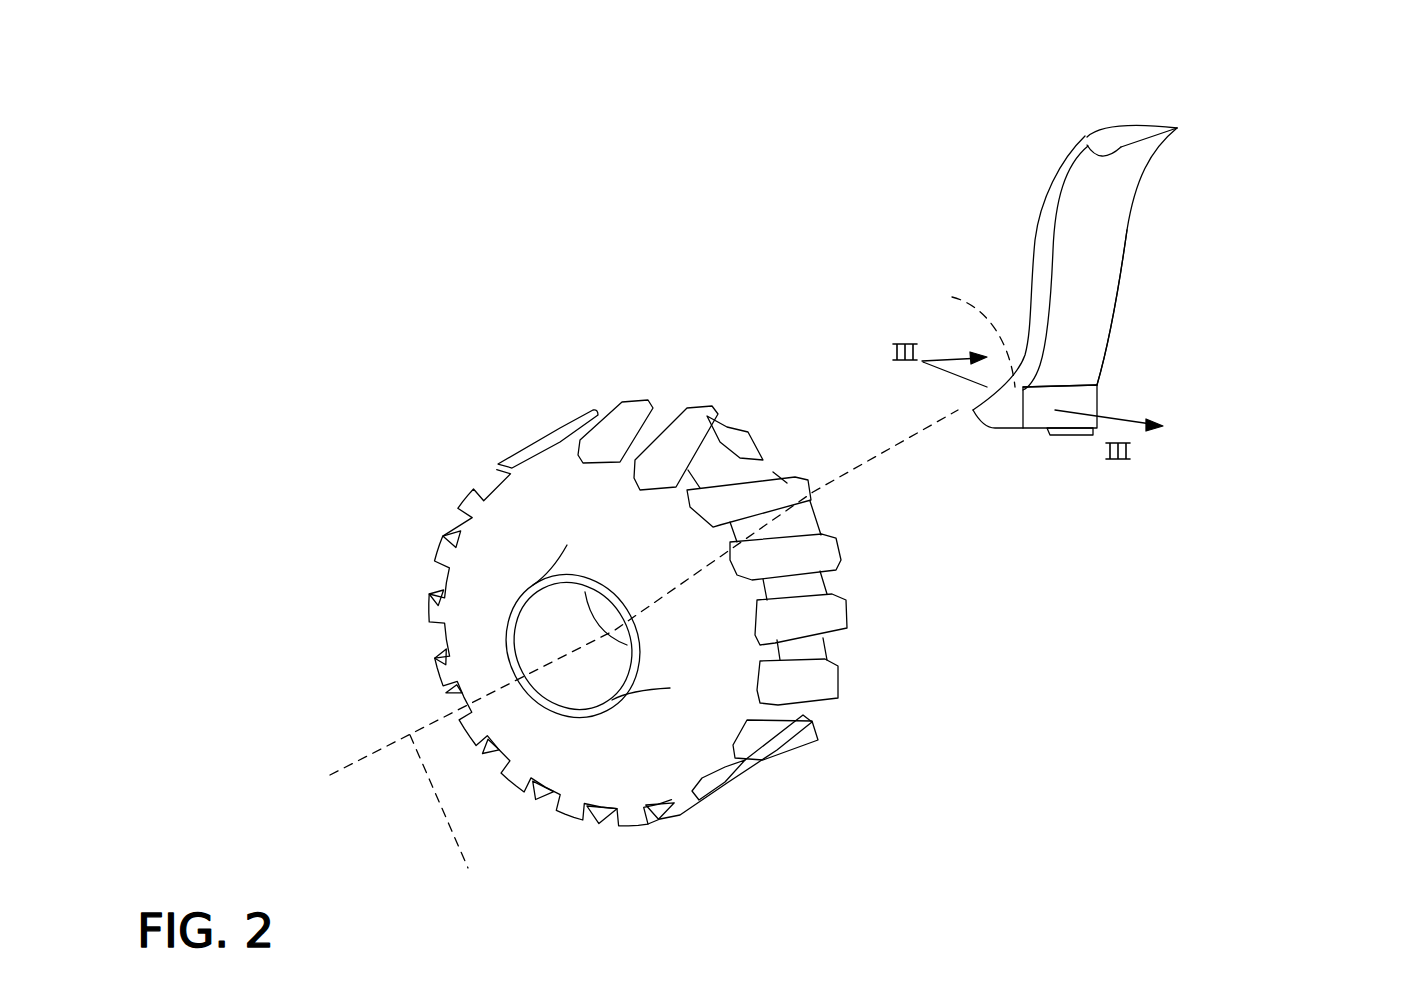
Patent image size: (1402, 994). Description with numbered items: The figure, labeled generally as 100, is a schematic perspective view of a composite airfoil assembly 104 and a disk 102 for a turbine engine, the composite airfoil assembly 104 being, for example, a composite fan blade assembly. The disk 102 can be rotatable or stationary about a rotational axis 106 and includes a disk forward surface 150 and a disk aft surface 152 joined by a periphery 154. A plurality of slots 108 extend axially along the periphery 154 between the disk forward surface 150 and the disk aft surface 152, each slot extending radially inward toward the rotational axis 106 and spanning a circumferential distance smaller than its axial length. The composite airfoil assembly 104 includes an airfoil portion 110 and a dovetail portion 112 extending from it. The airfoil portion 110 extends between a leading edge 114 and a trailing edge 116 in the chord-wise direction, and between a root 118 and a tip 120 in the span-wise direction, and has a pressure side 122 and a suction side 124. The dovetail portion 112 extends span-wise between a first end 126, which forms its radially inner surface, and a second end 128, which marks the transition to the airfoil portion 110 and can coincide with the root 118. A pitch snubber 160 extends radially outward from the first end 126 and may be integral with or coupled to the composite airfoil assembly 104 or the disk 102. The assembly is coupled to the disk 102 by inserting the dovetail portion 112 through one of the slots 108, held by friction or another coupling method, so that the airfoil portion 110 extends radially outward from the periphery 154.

The cutting assembly 100 is at (435, 72).
The disk 102 is at (775, 792).
The composite airfoil assembly 104 is at (1142, 193).
The rotational axis 106 is at (644, 653).
The plurality of slots 108 is at (708, 420).
The airfoil portion 110 is at (1082, 182).
The dovetail portion 112 is at (1037, 430).
The leading edge 114 is at (1033, 233).
The trailing edge 116 is at (1122, 253).
The root 118 is at (1070, 380).
The tip 120 is at (1112, 125).
The pressure side 122 is at (1084, 150).
The suction side 124 is at (1128, 122).
The first end 126 is at (992, 428).
The second end 128 is at (957, 335).
The disk forward surface 150 is at (504, 461).
The disk aft surface 152 is at (807, 745).
The periphery 154 is at (795, 583).
The pitch snubber 160 is at (1073, 430).